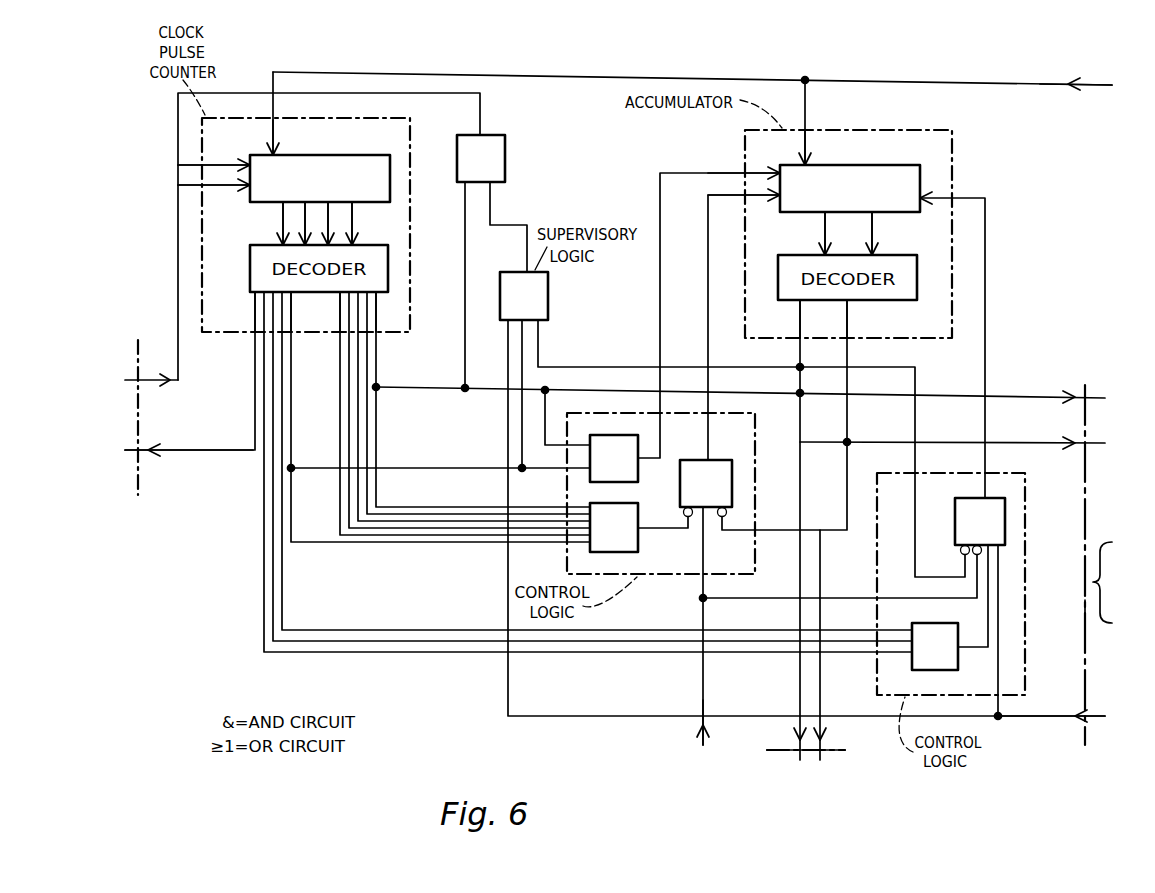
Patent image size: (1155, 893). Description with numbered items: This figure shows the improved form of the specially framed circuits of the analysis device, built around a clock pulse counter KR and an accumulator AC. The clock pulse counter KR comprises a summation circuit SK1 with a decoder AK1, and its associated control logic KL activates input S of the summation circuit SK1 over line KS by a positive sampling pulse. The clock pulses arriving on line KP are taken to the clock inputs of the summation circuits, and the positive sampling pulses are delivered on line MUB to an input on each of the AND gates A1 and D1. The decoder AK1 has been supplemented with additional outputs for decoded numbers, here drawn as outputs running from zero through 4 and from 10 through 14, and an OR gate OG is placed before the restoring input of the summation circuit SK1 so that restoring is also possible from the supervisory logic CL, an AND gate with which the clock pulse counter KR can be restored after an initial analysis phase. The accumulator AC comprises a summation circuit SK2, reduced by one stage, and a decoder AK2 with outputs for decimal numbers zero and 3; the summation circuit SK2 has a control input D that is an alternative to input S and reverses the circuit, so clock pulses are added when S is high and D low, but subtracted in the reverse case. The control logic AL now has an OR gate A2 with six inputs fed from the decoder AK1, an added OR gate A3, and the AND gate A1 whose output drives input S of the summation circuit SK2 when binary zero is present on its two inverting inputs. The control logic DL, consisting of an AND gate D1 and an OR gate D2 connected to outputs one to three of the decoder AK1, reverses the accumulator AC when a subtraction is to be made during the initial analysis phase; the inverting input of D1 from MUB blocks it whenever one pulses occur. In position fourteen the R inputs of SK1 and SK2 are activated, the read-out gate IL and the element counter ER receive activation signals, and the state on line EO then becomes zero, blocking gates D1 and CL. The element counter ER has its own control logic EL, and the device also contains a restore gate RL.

The clock pulse counter KR is at (410, 130).
The summation circuit SK1 is at (352, 148).
The decoder AK1 is at (373, 239).
The decoder output for decimal number four 4 is at (291, 312).
The decoder output for decimal number ten 10 is at (340, 312).
The decoder output for decimal number fourteen 14 is at (376, 312).
The decoder output for decimal number three 3 is at (847, 322).
The OR gate OG is at (505, 148).
The supervisory logic CL is at (548, 285).
The accumulator AC is at (952, 148).
The summation circuit SK2 is at (880, 160).
The decoder AK2 is at (905, 253).
The control logic AL is at (757, 440).
The AND gate A1 is at (713, 460).
The OR gate A2 is at (638, 547).
The OR gate A3 is at (638, 476).
The control logic DL is at (1025, 492).
The AND gate D1 is at (955, 512).
The OR gate D2 is at (958, 668).
The clock pulse line KP is at (1093, 89).
The start line KS is at (135, 417).
The control logic KL is at (133, 468).
The element counter output line EO is at (1066, 718).
The sampling pulse line MUB is at (691, 744).
The read-out gate IL is at (838, 752).
The element counter ER is at (1118, 582).
The control logic EL is at (1113, 587).
The restore gate RL is at (1113, 610).